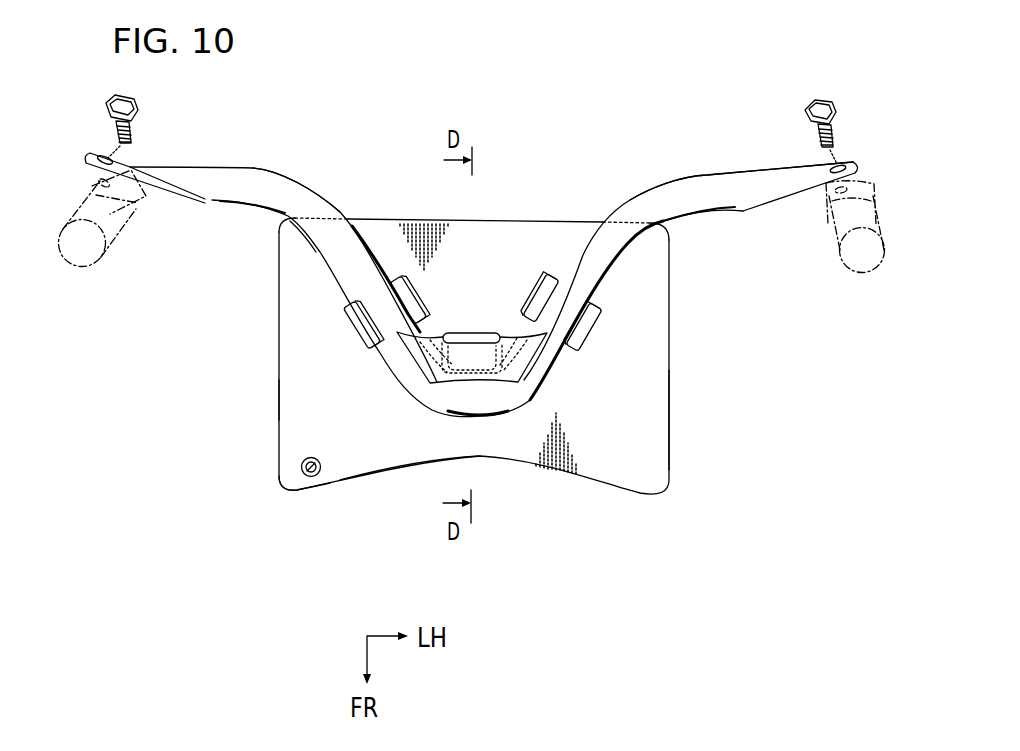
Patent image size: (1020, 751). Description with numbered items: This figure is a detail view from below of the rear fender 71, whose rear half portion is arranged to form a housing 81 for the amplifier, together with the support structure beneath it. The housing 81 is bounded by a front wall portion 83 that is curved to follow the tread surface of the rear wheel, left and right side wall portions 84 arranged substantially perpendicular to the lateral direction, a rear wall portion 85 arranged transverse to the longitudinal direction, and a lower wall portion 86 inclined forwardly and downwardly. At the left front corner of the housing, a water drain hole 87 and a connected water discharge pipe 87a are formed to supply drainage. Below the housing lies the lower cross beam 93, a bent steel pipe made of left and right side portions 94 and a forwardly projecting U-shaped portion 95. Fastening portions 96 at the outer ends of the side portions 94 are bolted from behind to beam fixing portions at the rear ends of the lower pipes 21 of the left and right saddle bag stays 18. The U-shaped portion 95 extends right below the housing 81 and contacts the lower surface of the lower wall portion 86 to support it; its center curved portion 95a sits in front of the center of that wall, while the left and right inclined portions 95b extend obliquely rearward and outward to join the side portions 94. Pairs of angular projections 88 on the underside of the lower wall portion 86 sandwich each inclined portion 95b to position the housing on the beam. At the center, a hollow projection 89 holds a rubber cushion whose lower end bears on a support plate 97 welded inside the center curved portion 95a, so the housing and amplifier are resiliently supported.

The housing 81 is at (474, 416).
The rear fender 71 is at (600, 487).
The front wall portion 83 is at (393, 470).
The side wall portion 84 is at (279, 400).
The rear wall portion 85 is at (522, 218).
The lower wall portion 86 is at (647, 430).
The water drain hole 87 is at (268, 508).
The water discharge pipe 87a is at (301, 466).
The angular projection 88 is at (405, 318).
The hollow projection 89 is at (490, 333).
The lower cross beam 93 is at (491, 260).
The side portion 94 is at (227, 180).
The U-shaped portion 95 is at (491, 379).
The center curved portion 95a is at (480, 413).
The inclined portion 95b is at (350, 276).
The fastening portion 96 is at (127, 160).
The support plate 97 is at (472, 323).
The lower pipe 21 is at (472, 253).
The saddle bag stay 18 is at (77, 267).